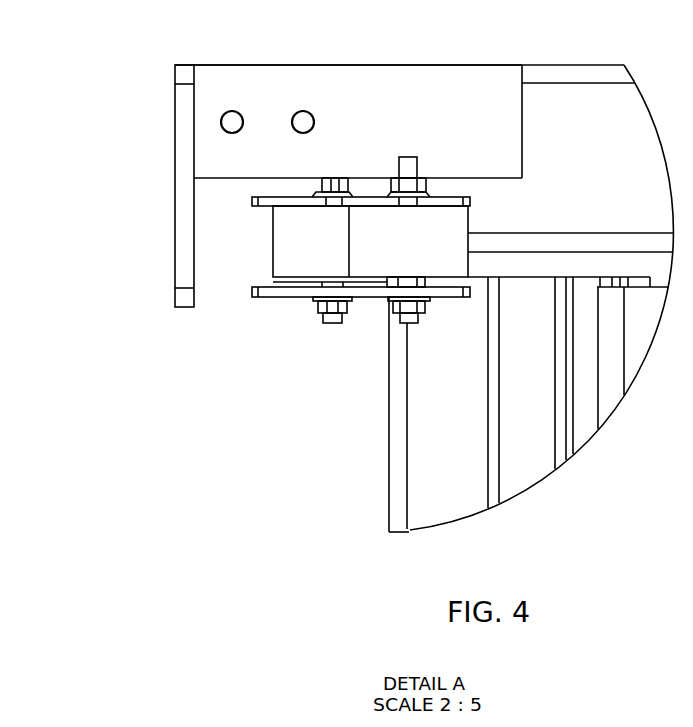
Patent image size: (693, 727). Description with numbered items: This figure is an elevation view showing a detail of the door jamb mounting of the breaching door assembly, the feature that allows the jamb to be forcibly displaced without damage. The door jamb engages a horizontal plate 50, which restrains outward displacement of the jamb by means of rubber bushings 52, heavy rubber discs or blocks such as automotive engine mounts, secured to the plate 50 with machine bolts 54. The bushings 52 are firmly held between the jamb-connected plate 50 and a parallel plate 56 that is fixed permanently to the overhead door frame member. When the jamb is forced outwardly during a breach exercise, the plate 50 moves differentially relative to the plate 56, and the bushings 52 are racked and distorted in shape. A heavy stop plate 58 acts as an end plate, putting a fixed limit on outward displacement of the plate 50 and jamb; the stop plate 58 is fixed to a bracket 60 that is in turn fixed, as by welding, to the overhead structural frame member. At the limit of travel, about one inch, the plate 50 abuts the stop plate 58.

The horizontal plate 50 is at (282, 298).
The rubber bushings 52 is at (447, 232).
The machine bolts 54 is at (419, 323).
The parallel plate 56 is at (447, 200).
The stop plate 58 is at (183, 228).
The bracket 60 is at (370, 90).